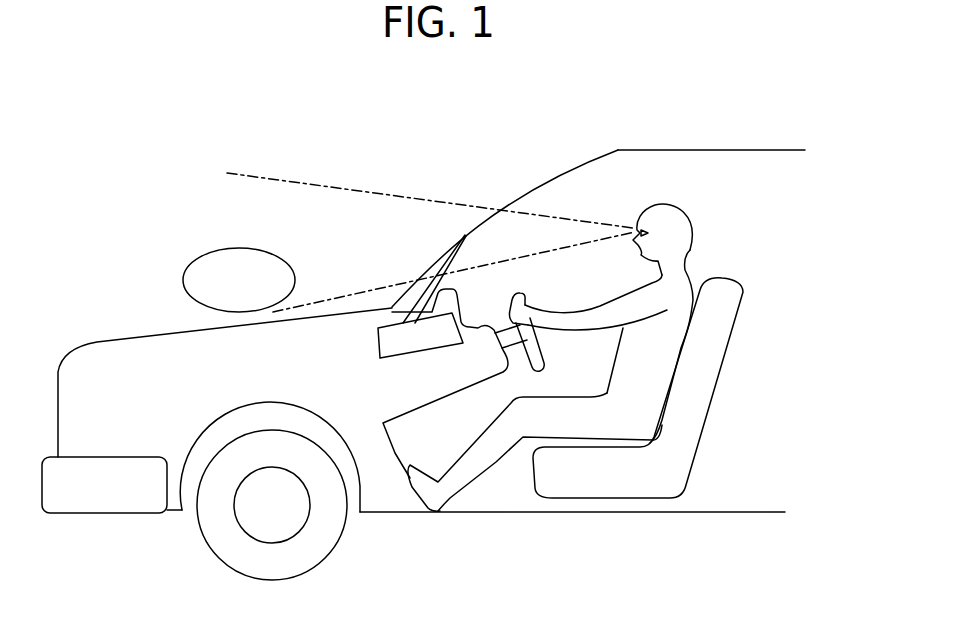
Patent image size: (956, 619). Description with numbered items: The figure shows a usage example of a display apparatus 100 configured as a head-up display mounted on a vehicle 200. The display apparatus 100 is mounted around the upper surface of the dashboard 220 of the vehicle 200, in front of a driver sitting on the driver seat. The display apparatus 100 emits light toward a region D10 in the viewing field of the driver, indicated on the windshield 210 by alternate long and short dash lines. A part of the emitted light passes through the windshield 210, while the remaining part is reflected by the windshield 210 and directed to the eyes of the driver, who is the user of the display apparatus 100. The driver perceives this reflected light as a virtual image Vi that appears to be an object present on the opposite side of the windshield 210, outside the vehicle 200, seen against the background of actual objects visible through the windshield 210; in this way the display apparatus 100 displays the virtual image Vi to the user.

The display apparatus 100 is at (403, 344).
The vehicle 200 is at (643, 512).
The windshield 210 is at (575, 168).
The dashboard 220 is at (478, 370).
The region D10 is at (430, 267).
The virtual image Vi is at (217, 248).